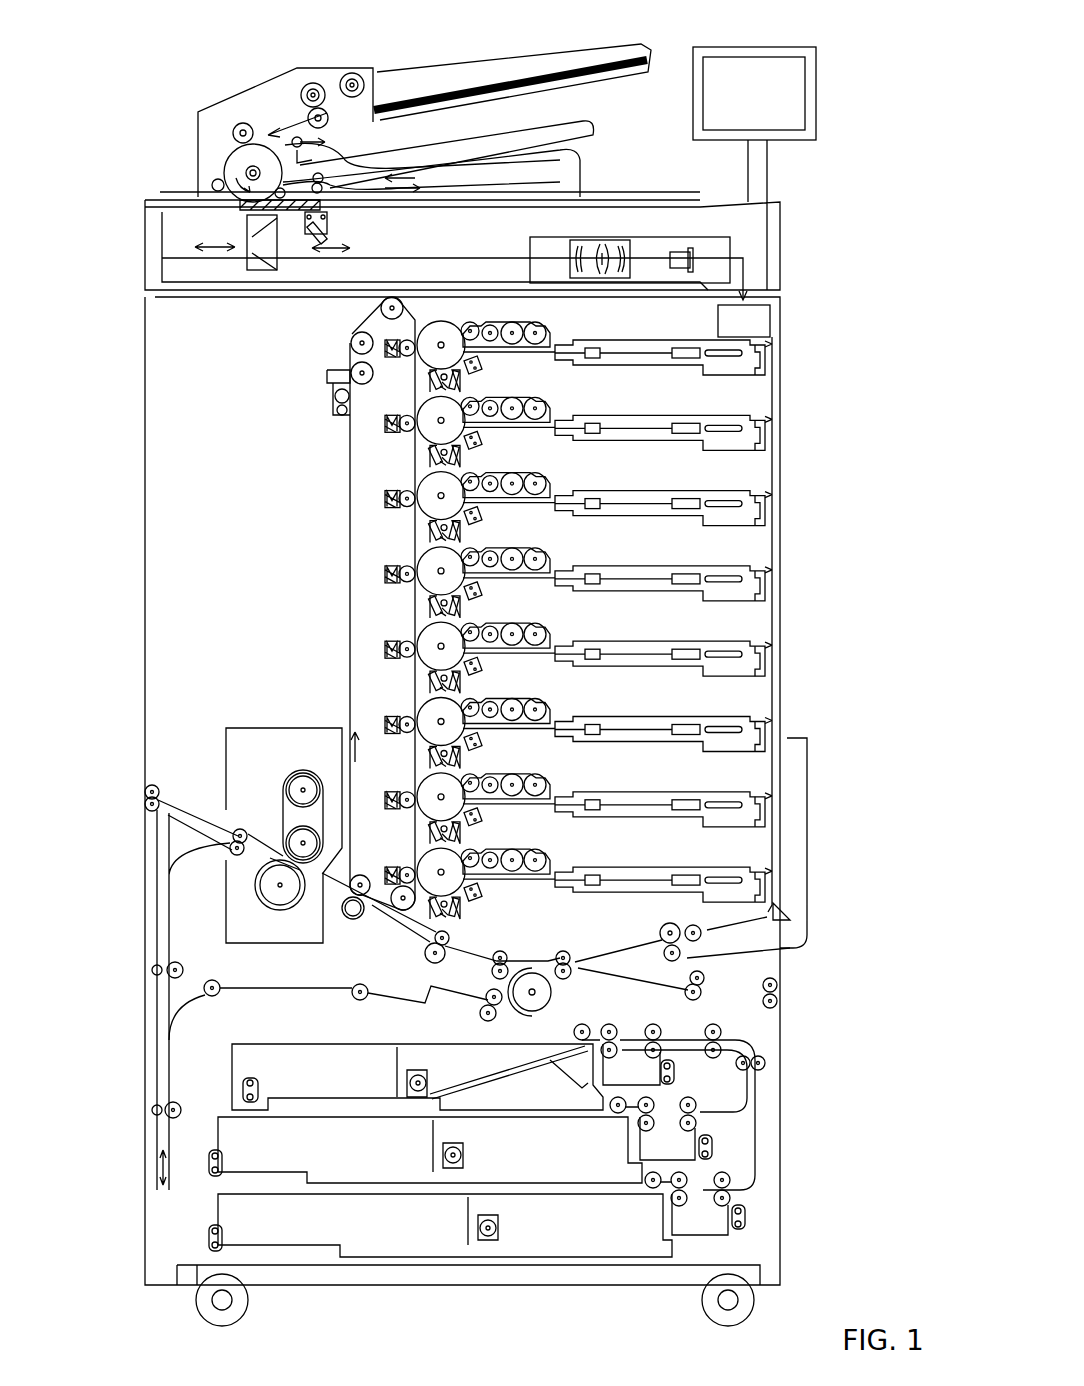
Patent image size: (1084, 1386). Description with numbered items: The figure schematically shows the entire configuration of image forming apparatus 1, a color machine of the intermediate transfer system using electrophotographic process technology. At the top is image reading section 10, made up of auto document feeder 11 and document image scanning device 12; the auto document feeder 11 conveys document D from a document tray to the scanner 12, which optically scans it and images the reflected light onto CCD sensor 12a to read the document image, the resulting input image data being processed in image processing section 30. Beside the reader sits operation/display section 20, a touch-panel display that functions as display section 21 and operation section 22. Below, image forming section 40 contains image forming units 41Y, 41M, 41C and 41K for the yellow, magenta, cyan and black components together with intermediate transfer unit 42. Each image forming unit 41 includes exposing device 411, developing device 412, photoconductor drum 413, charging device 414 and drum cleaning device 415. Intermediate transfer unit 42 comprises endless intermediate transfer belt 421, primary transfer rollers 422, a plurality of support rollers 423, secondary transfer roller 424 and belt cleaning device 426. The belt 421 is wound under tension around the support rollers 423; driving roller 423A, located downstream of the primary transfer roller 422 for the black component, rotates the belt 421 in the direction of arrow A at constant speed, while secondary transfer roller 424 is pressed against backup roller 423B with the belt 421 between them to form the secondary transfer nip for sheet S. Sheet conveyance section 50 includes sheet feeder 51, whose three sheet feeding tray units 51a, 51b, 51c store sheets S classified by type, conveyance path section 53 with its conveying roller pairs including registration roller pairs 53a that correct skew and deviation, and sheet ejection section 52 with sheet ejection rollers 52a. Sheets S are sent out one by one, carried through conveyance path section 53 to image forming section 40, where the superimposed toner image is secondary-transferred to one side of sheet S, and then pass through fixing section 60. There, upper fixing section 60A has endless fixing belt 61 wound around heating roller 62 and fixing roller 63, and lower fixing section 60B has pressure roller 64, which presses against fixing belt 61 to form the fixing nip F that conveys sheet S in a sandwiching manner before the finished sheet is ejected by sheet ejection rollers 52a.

The image forming apparatus 1 is at (441, 40).
The image reading section 10 is at (422, 159).
The auto document feeder 11 is at (407, 114).
The document image scanning device 12 is at (447, 230).
The CCD sensor 12a is at (695, 252).
The operation/display section 20 is at (770, 102).
The display section 21 is at (754, 93).
The operation section 22 is at (757, 171).
The image processing section 30 is at (775, 300).
The image forming section 40 is at (468, 640).
The image forming unit 41 is at (570, 353).
The image forming unit for Y component 41Y is at (570, 380).
The image forming unit for M component 41M is at (579, 555).
The image forming unit for C component 41C is at (579, 707).
The image forming unit for K component 41K is at (579, 859).
The exposing device 411 is at (633, 340).
The developing device 412 is at (552, 333).
The photoconductor drum 413 is at (440, 330).
The charging device 414 is at (482, 366).
The drum cleaning device 415 is at (430, 385).
The intermediate transfer unit 42 is at (334, 642).
The intermediate transfer belt 421 is at (345, 630).
The primary transfer roller 422 is at (406, 356).
The support rollers 423 is at (352, 340).
The driving roller 423A is at (400, 911).
The backup roller 423B is at (350, 920).
The secondary transfer roller 424 is at (356, 896).
The belt cleaning device 426 is at (335, 378).
The sheet conveyance section 50 is at (490, 983).
The sheet feeder 51 is at (458, 1132).
The sheet feeding tray unit 51a is at (242, 1078).
The sheet feeding tray unit 51b is at (230, 1155).
The sheet feeding tray unit 51c is at (230, 1230).
The sheet ejection section 52 is at (196, 782).
The sheet ejection rollers 52a is at (235, 830).
The conveyance path section 53 is at (564, 879).
The registration roller pairs 53a is at (474, 926).
The fixing section 60 is at (261, 827).
The upper fixing section 60A is at (251, 786).
The lower fixing section 60B is at (245, 913).
The fixing belt 61 is at (287, 813).
The heating roller 62 is at (300, 778).
The fixing roller 63 is at (292, 842).
The pressure roller 64 is at (262, 885).
The belt travelling direction A is at (365, 747).
The document D is at (530, 60).
The fixing nip F is at (240, 728).
The sheet S is at (480, 1049).